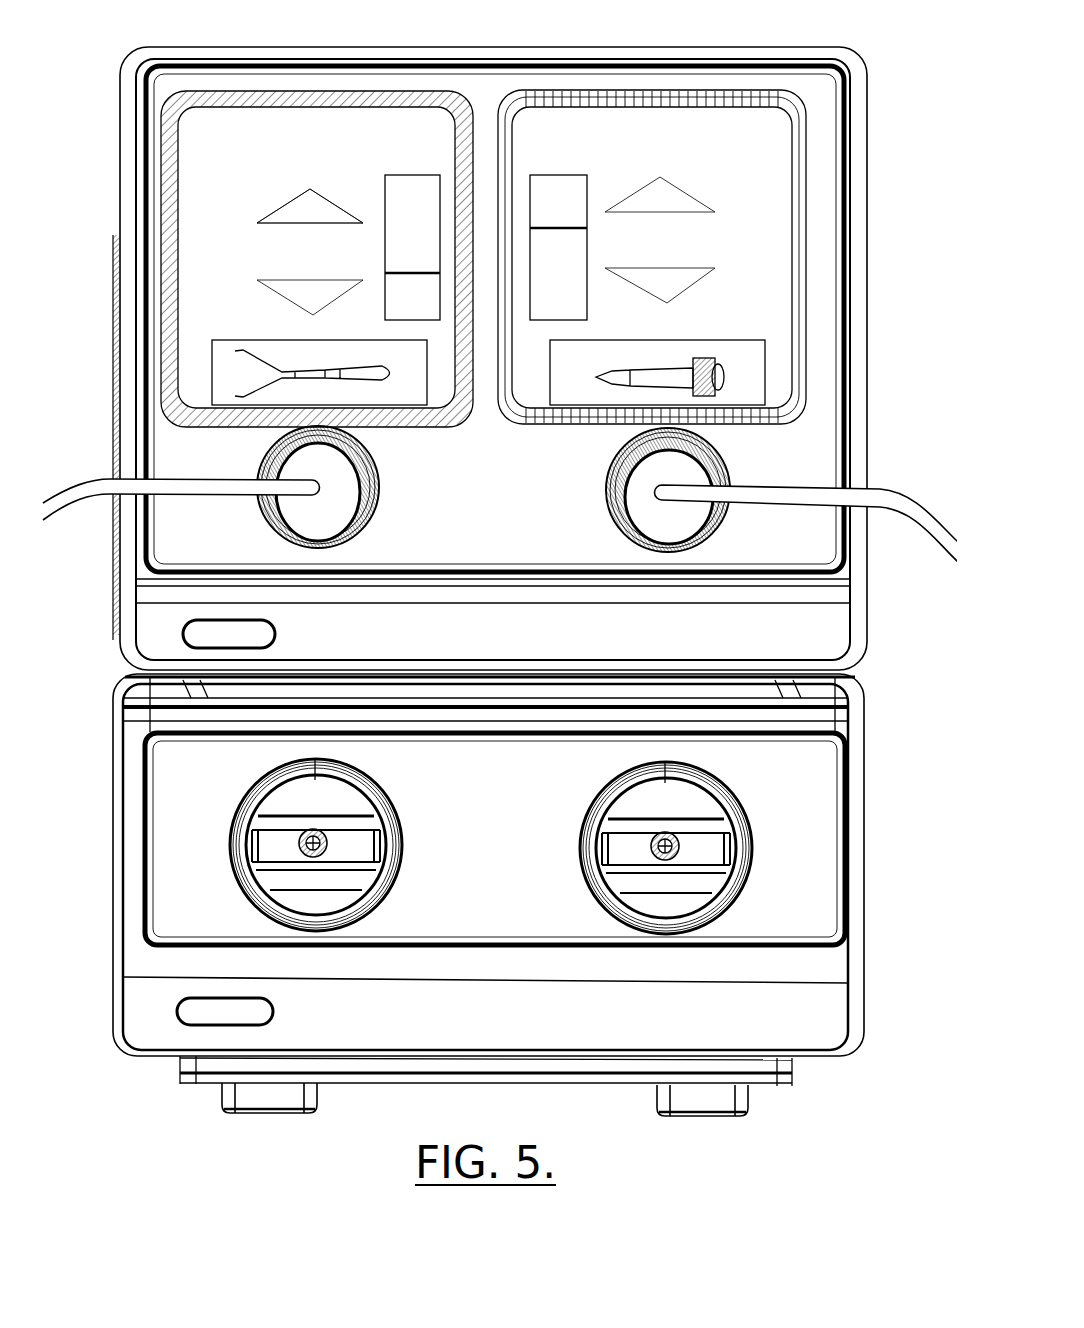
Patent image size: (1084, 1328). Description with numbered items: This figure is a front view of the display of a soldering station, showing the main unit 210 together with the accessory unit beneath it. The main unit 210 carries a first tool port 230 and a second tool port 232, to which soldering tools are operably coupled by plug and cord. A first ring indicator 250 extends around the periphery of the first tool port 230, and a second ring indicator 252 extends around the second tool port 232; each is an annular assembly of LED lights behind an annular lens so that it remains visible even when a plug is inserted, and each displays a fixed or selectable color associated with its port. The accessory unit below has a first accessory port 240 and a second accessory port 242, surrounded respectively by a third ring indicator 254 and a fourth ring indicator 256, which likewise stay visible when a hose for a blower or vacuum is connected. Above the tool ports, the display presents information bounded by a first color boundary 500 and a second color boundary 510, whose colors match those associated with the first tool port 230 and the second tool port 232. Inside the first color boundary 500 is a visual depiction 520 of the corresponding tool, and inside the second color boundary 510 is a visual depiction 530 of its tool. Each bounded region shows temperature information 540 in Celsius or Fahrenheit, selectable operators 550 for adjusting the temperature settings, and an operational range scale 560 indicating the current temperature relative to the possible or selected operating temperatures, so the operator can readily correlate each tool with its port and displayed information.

The main unit 210 is at (490, 558).
The first color boundary 500 is at (317, 213).
The second color boundary 510 is at (653, 213).
The visual depiction 520 is at (237, 345).
The visual depiction 530 is at (767, 324).
The temperature information 540 is at (208, 235).
The selectable operators 550 is at (203, 182).
The operational range scale 560 is at (366, 220).
The first tool port 230 is at (271, 487).
The second tool port 232 is at (621, 490).
The first ring indicator 250 is at (201, 495).
The second ring indicator 252 is at (791, 494).
The first accessory port 240 is at (264, 847).
The second accessory port 242 is at (618, 854).
The third ring indicator 254 is at (354, 840).
The fourth ring indicator 256 is at (702, 849).